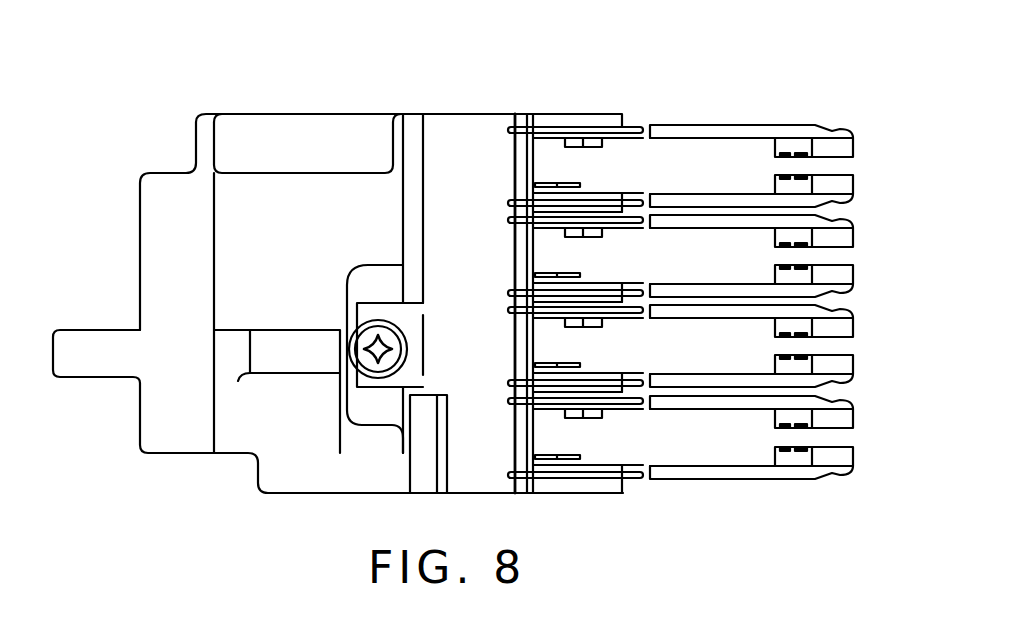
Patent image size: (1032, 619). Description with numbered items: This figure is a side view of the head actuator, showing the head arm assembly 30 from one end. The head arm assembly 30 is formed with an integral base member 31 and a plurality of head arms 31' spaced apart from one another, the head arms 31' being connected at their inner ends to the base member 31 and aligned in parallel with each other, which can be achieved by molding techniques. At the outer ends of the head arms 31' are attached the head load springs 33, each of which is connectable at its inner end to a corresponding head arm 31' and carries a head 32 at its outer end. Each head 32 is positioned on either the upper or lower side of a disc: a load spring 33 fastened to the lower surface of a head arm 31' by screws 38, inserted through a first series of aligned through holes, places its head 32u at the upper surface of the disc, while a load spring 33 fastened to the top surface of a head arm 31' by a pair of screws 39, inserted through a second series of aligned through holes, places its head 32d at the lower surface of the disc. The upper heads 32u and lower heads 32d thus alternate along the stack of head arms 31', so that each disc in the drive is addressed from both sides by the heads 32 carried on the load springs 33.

The head arm assembly 30 is at (335, 104).
The base member 31 is at (338, 263).
The head arms 31' is at (607, 269).
The head 32 is at (857, 177).
The head on upper surface of disc 32u is at (814, 224).
The head on lower surface of disc 32d is at (842, 18).
The head load springs 33 is at (734, 124).
The screws 38 is at (593, 138).
The screws 39 is at (567, 184).